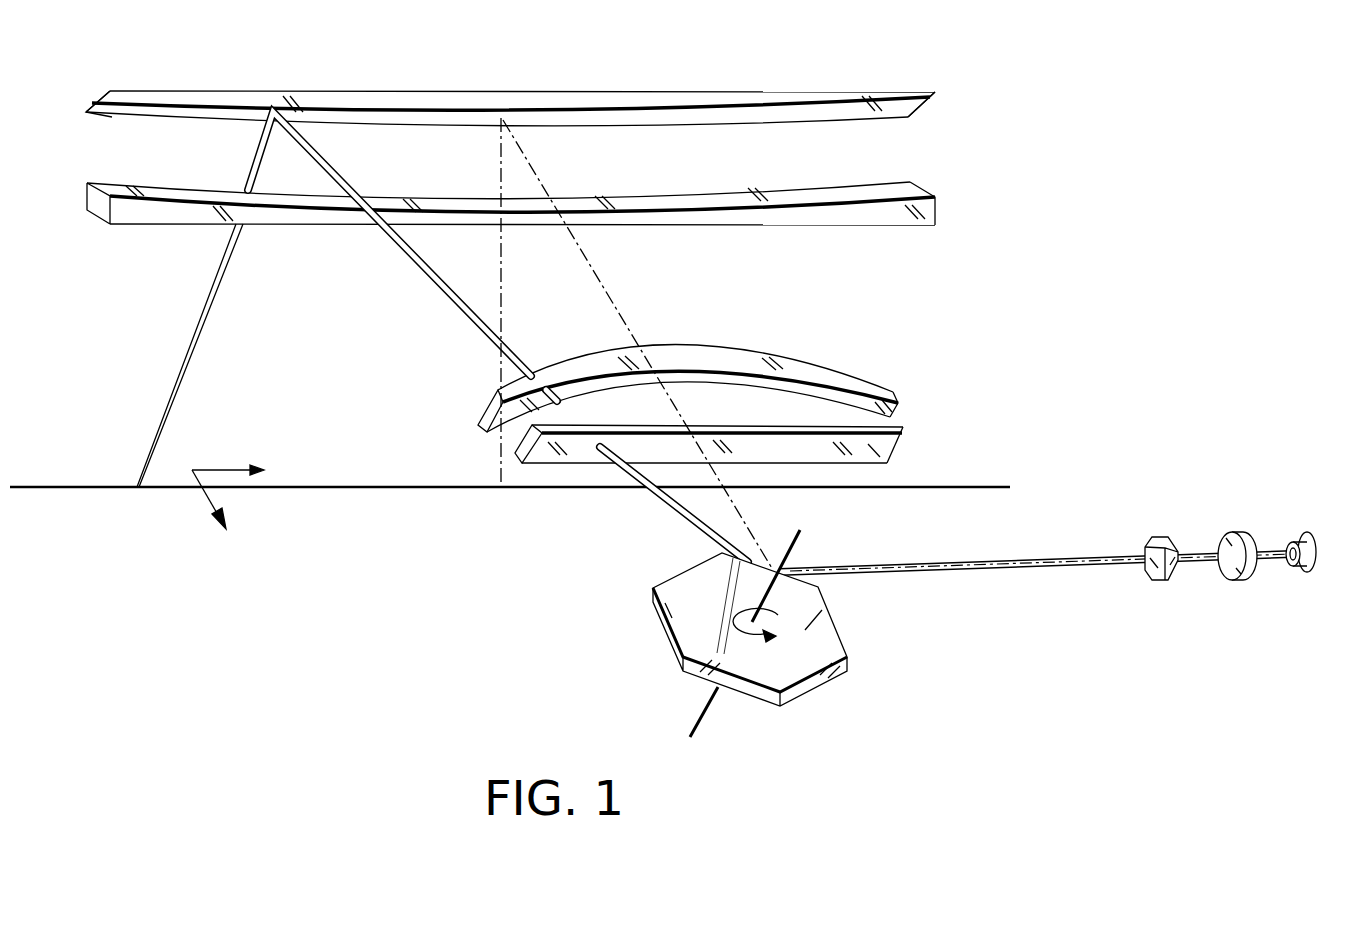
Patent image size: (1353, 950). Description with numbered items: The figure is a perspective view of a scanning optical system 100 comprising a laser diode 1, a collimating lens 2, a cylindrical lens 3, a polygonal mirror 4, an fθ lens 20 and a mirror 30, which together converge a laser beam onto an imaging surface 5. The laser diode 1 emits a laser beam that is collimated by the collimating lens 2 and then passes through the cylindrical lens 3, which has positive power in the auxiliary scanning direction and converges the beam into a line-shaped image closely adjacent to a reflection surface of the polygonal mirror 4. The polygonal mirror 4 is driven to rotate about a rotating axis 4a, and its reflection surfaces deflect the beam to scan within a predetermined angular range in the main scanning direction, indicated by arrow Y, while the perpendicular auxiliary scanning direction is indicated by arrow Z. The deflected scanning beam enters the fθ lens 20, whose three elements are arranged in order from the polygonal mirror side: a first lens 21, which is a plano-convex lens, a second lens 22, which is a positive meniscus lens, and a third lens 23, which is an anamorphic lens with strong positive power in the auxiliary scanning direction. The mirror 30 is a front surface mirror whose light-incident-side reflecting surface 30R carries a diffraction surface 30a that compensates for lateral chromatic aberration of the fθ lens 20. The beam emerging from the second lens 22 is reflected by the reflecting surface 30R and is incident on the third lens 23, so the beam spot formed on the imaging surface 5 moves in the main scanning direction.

The laser diode 1 is at (1303, 532).
The collimating lens 2 is at (1237, 580).
The cylindrical lens 3 is at (1150, 578).
The polygonal mirror 4 is at (828, 636).
The rotating axis 4a is at (705, 715).
The imaging surface 5 is at (78, 485).
The fθ lens 20 is at (564, 322).
The first lens 21 is at (746, 433).
The second lens 22 is at (877, 387).
The third lens 23 is at (893, 213).
The mirror 30 is at (595, 94).
The reflecting surface 30R is at (120, 107).
The diffraction surface 30a is at (906, 116).
The scanning optical system 100 is at (663, 397).